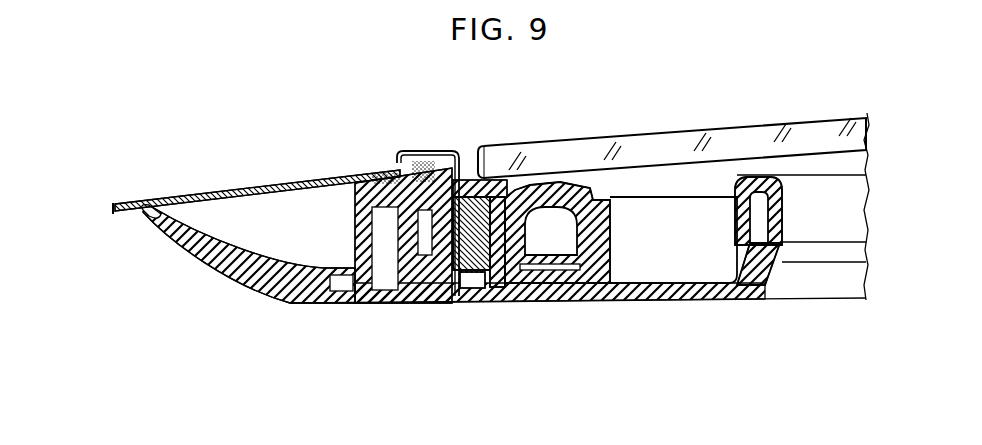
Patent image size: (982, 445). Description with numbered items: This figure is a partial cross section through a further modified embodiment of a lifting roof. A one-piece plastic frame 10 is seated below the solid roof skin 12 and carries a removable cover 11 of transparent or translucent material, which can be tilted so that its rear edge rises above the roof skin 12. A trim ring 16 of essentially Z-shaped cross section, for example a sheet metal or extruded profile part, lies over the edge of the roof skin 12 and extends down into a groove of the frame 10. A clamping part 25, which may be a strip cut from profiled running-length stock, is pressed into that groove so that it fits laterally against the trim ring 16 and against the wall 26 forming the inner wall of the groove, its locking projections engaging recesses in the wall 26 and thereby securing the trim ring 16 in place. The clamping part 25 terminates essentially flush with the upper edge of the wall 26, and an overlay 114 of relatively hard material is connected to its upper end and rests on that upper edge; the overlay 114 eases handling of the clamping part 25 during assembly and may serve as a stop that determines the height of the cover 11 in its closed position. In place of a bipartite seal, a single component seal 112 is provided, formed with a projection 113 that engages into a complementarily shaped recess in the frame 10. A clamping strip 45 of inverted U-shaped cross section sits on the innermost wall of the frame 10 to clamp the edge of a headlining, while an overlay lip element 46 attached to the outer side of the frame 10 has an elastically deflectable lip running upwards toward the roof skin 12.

The frame 10 is at (677, 315).
The cover 11 is at (740, 148).
The roof skin 12 is at (245, 188).
The trim ring 16 is at (440, 150).
The clamping part 25 is at (472, 288).
The inner wall 26 is at (500, 287).
The clamping strip 45 is at (825, 220).
The overlay lip element 46 is at (290, 290).
The single component seal 112 is at (588, 187).
The projection 113 is at (525, 287).
The overlay 114 is at (473, 180).